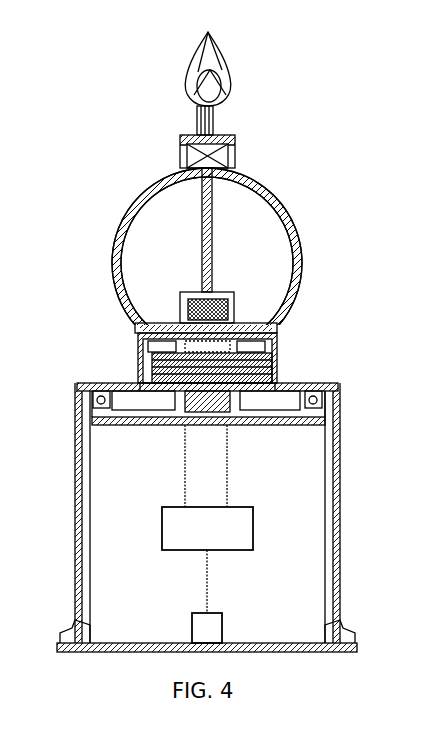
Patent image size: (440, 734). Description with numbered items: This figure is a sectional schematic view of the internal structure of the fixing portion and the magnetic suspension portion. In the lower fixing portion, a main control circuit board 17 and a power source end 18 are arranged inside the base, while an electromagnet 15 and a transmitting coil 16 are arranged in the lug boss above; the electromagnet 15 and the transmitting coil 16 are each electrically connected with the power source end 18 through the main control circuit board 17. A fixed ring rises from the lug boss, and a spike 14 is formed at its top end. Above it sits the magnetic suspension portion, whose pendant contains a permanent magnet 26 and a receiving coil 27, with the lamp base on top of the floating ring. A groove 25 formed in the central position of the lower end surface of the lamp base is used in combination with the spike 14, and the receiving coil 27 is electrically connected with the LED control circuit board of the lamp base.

The spike 14 is at (212, 176).
The groove 25 is at (235, 150).
The receiving coil 27 is at (198, 318).
The permanent magnet 26 is at (212, 313).
The transmitting coil 16 is at (153, 370).
The electromagnet 15 is at (210, 370).
The main control circuit board 17 is at (198, 537).
The power source end 18 is at (215, 630).